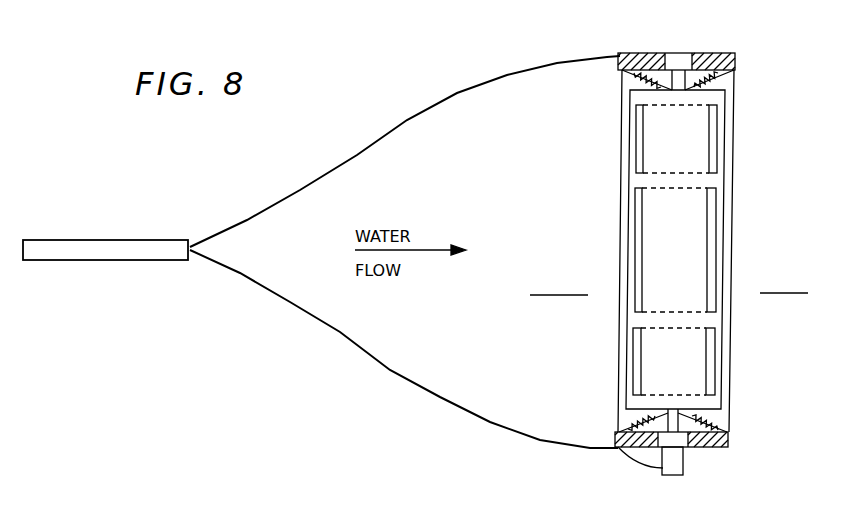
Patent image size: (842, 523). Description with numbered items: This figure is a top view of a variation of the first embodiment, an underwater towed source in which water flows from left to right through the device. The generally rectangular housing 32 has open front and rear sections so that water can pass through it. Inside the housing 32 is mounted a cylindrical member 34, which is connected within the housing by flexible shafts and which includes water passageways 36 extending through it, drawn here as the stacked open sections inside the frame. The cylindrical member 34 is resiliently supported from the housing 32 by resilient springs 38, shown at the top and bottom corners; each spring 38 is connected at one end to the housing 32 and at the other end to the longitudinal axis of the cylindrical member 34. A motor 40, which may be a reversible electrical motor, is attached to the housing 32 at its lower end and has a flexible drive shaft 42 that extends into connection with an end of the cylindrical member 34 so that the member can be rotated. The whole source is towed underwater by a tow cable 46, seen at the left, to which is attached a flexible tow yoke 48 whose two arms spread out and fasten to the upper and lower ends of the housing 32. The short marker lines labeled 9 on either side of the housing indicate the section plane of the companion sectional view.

The section line 9- 9 is at (782, 300).
The bottom clamp bar 32 is at (704, 448).
The filter frame 34 is at (688, 249).
The filter elements 36 is at (718, 198).
The springs 38 is at (650, 80).
The bolt 40 is at (670, 472).
The stem 42 is at (668, 425).
The handle 46 is at (129, 246).
The cables 48 is at (437, 107).